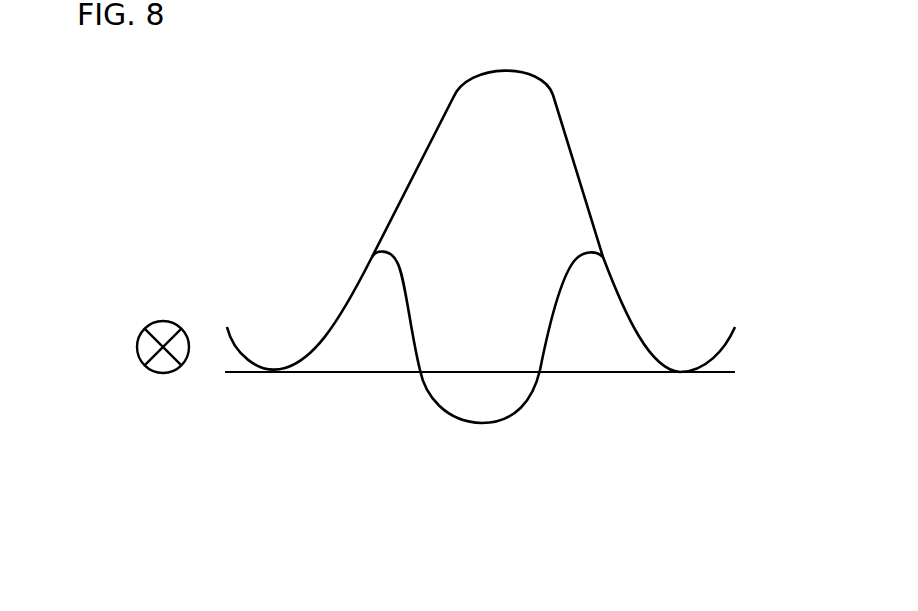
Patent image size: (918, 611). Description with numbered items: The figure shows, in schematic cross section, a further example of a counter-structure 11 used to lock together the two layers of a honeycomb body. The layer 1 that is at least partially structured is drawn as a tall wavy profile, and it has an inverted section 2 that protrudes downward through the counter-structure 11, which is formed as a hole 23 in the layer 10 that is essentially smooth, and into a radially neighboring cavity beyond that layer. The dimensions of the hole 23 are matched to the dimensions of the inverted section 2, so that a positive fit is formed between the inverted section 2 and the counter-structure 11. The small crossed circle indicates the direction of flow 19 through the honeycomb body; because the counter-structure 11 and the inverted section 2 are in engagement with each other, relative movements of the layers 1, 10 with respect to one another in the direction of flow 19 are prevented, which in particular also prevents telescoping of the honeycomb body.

The layer that is at least partially structured 1 is at (717, 353).
The inverted section 2 is at (483, 423).
The layer that is essentially smooth 10 is at (705, 374).
The counter-structure 11 is at (420, 376).
The direction of flow 19 is at (160, 373).
The hole 23 is at (477, 369).